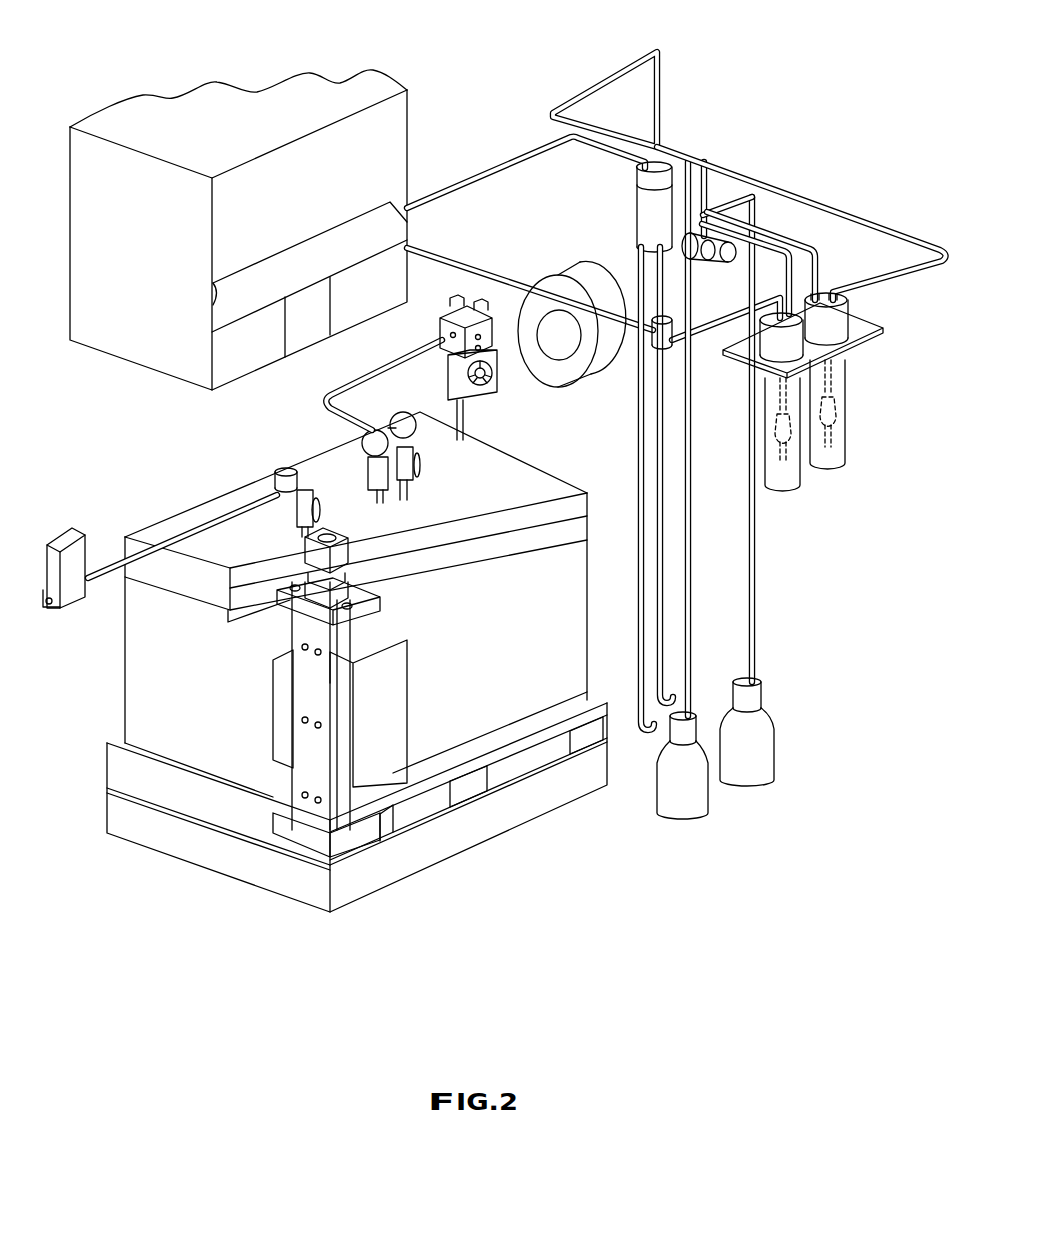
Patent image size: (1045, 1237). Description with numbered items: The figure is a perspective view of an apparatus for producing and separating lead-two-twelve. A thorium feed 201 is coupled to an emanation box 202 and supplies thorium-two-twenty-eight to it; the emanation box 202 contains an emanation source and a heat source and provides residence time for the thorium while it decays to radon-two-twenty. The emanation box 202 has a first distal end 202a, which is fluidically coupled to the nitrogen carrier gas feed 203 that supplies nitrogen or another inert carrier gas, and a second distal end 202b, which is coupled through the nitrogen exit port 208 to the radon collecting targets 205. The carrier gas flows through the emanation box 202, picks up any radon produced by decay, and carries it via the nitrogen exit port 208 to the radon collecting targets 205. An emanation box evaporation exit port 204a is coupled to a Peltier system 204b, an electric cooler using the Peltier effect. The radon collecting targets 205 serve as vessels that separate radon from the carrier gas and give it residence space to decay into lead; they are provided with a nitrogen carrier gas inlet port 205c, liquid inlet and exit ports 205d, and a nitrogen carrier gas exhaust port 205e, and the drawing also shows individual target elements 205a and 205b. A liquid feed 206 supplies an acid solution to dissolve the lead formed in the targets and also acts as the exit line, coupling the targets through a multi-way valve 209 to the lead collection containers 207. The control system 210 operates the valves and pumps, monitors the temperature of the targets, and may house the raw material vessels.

The Th-228 feed 201 is at (357, 542).
The emanation box 202 is at (165, 697).
The first distal end 202a is at (320, 492).
The second distal end 202b is at (430, 460).
The N2 carrier gas feed 203 is at (66, 530).
The emanation box evaporation exit port 204a is at (360, 437).
The Peltier system 204b is at (432, 326).
The Rn-220 collecting targets 205 is at (805, 351).
The filter cartridge 205a is at (783, 492).
The filter cartridge 205b is at (858, 468).
The N2 carrier gas inlet port 205c is at (811, 287).
The liquid inlet and exit ports 205d is at (828, 283).
The N2 carrier gas exhaust port 205e is at (842, 292).
The liquid feed 206 is at (630, 190).
The Pb-212 collection container 207 is at (733, 788).
The N2 exit port 208 is at (397, 388).
The multi-way valve 209 is at (714, 200).
The control system 210 is at (172, 92).